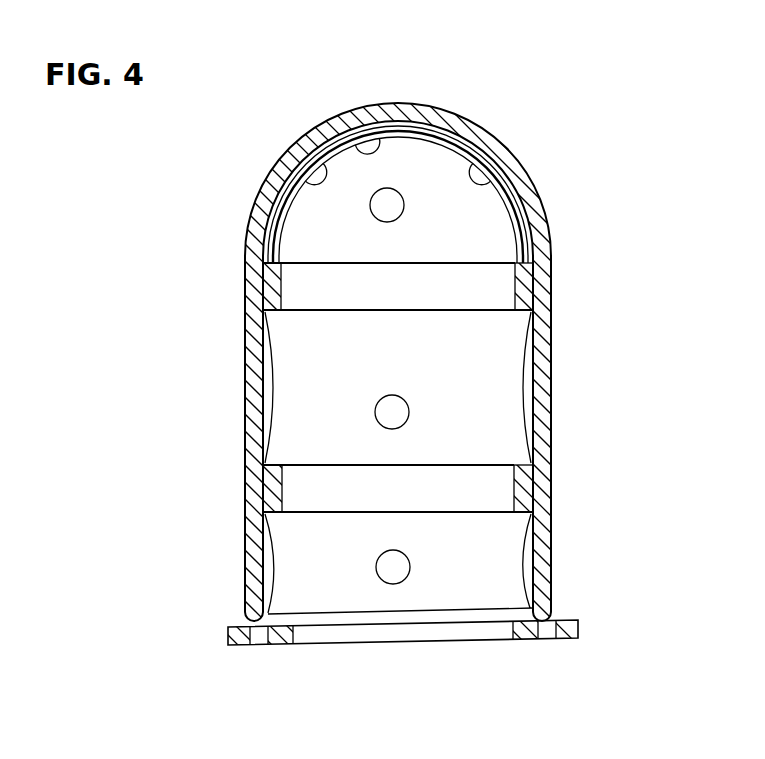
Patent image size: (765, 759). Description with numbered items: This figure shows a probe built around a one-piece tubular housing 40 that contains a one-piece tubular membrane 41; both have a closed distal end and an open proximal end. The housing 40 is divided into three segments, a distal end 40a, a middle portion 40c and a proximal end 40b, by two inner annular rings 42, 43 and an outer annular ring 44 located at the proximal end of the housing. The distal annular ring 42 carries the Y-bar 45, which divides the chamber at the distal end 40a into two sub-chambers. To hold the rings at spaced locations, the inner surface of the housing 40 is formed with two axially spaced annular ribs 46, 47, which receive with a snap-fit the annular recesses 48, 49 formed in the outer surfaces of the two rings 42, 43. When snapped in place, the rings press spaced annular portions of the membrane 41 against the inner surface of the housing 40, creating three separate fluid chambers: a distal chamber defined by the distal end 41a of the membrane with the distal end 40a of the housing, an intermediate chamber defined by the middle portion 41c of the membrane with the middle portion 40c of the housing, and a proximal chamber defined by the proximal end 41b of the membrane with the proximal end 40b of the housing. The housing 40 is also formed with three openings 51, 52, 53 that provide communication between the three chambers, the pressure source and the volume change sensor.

The housing 40 is at (262, 181).
The distal end of the housing 40a is at (539, 194).
The proximal end of the housing 40b is at (552, 500).
The middle portion of the housing 40c is at (551, 333).
The membrane 41 is at (275, 157).
The distal end of the membrane 41a is at (493, 146).
The proximal end of the membrane 41b is at (525, 552).
The middle portion of the membrane 41c is at (527, 393).
The distal annular ring 42 is at (365, 299).
The annular ring 43 is at (322, 464).
The outer annular ring 44 is at (578, 620).
The Y-bar 45 is at (384, 152).
The annular rib 46 is at (265, 288).
The annular rib 47 is at (270, 493).
The annular recess 48 is at (282, 295).
The annular recess 49 is at (282, 492).
The opening 51 is at (378, 217).
The opening 52 is at (409, 566).
The opening 53 is at (396, 395).